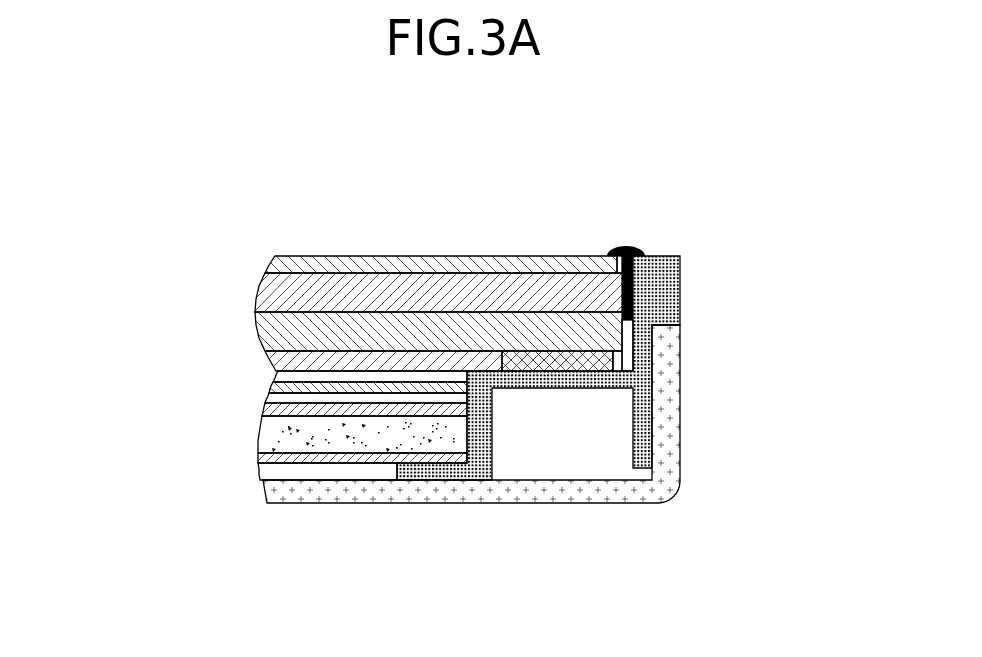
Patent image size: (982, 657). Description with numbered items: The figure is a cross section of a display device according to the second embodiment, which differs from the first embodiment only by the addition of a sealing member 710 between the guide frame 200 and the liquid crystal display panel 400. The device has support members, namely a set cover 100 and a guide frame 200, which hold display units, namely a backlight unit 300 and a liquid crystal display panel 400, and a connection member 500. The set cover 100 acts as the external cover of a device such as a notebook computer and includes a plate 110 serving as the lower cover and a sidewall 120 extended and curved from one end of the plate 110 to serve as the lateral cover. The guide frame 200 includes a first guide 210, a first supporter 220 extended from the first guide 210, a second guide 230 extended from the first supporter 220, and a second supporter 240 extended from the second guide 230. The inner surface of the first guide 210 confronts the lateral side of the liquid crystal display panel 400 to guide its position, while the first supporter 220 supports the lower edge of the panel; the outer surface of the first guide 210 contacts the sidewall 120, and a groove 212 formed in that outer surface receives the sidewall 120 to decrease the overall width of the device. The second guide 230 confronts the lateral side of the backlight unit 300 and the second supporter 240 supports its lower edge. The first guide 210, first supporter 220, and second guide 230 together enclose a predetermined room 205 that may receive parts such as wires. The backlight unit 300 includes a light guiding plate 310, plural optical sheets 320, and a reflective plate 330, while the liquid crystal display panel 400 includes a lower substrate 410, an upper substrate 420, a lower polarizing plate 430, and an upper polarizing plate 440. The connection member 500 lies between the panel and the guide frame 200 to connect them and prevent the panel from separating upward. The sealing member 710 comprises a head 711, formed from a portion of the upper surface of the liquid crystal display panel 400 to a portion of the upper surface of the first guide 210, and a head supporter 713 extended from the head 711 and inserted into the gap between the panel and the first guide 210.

The set cover 100 is at (544, 420).
The plate 110 is at (617, 500).
The sidewall 120 is at (672, 443).
The guide frame 200 is at (524, 425).
The predetermined room 205 is at (511, 402).
The first guide 210 is at (647, 305).
The groove 212 is at (670, 325).
The first supporter 220 is at (546, 380).
The second guide 230 is at (486, 416).
The second supporter 240 is at (436, 475).
The backlight unit 300 is at (274, 427).
The light guiding plate 310 is at (265, 432).
The optical sheets 320 is at (280, 410).
The reflective plate 330 is at (262, 461).
The liquid crystal display panel 400 is at (351, 313).
The lower substrate 410 is at (262, 333).
The upper substrate 420 is at (262, 300).
The lower polarizing plate 430 is at (280, 364).
The upper polarizing plate 440 is at (268, 270).
The connection member 500 is at (560, 360).
The sealing member 710 is at (654, 235).
The head 711 is at (628, 253).
The head supporter 713 is at (650, 270).